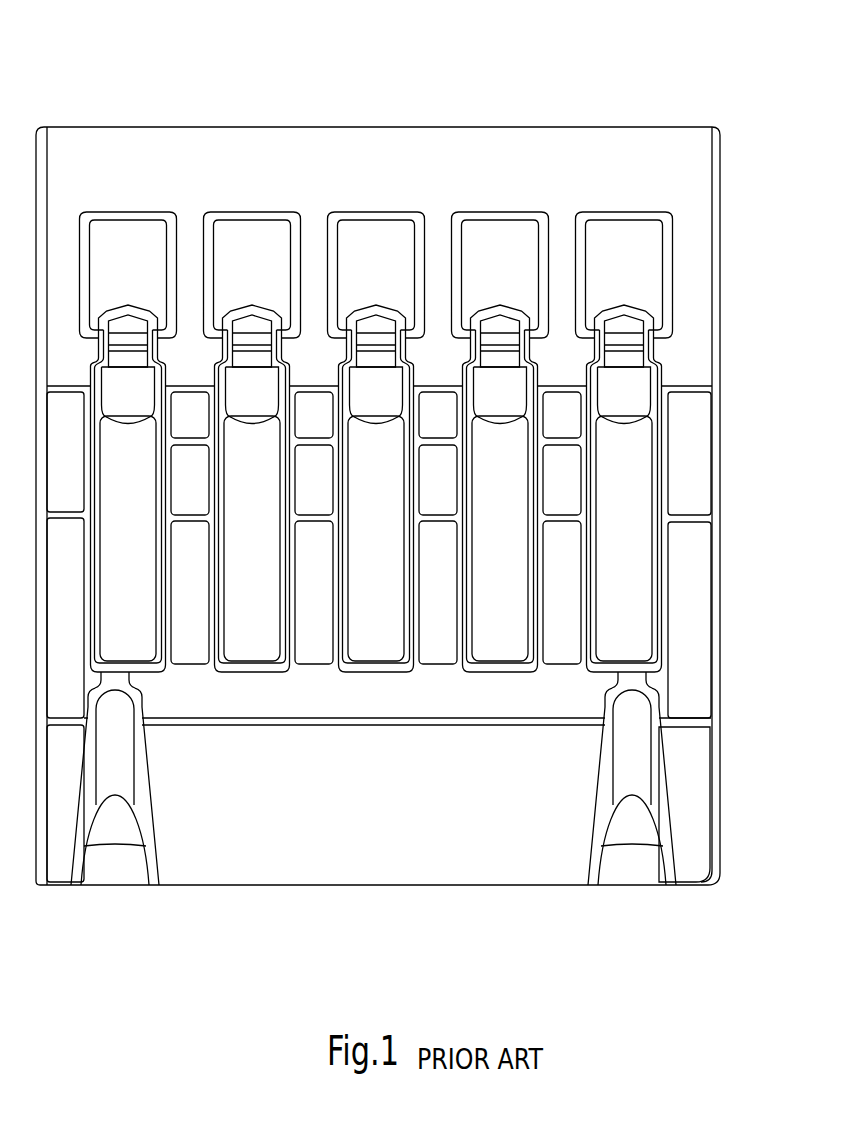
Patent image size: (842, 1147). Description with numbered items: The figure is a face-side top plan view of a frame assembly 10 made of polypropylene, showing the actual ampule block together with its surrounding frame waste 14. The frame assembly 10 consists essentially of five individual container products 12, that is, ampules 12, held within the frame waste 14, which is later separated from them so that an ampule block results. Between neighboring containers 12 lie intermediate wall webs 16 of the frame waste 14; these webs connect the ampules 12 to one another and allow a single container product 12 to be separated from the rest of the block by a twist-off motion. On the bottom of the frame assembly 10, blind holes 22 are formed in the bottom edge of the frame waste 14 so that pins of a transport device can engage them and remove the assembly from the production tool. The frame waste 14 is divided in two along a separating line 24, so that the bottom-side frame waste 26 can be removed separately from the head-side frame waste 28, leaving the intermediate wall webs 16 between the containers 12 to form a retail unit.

The frame assembly 10 is at (321, 834).
The container product 12 is at (376, 442).
The frame waste 14 is at (690, 647).
The intermediate wall web 16 is at (376, 525).
The blind hole 22 is at (113, 863).
The separating line 24 is at (690, 516).
The bottom-side frame waste 26 is at (692, 578).
The head-side frame waste 28 is at (313, 150).